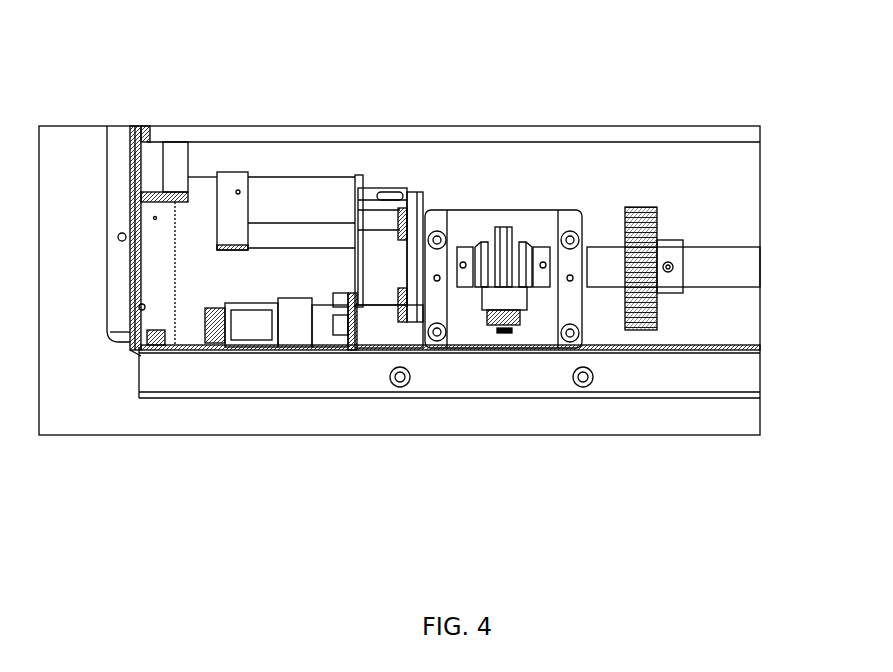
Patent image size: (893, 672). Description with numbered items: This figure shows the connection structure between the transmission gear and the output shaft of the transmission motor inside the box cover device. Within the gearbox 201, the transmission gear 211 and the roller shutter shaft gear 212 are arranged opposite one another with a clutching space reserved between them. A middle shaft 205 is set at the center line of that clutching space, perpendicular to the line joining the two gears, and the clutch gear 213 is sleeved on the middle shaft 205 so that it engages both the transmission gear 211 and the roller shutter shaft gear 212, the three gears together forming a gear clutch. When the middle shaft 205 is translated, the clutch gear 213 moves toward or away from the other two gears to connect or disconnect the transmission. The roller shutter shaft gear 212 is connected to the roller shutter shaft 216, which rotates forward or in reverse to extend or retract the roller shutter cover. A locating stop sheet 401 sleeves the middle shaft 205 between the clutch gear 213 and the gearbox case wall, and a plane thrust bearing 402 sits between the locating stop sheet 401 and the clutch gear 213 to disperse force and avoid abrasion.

The gearbox 201 is at (597, 350).
The middle shaft 205 is at (482, 196).
The transmission gear 211 is at (447, 213).
The roller shutter shaft gear 212 is at (556, 214).
The clutch gear 213 is at (454, 316).
The roller shutter shaft 216 is at (700, 263).
The locating stop sheet 401 is at (527, 369).
The plane thrust bearing 402 is at (465, 355).